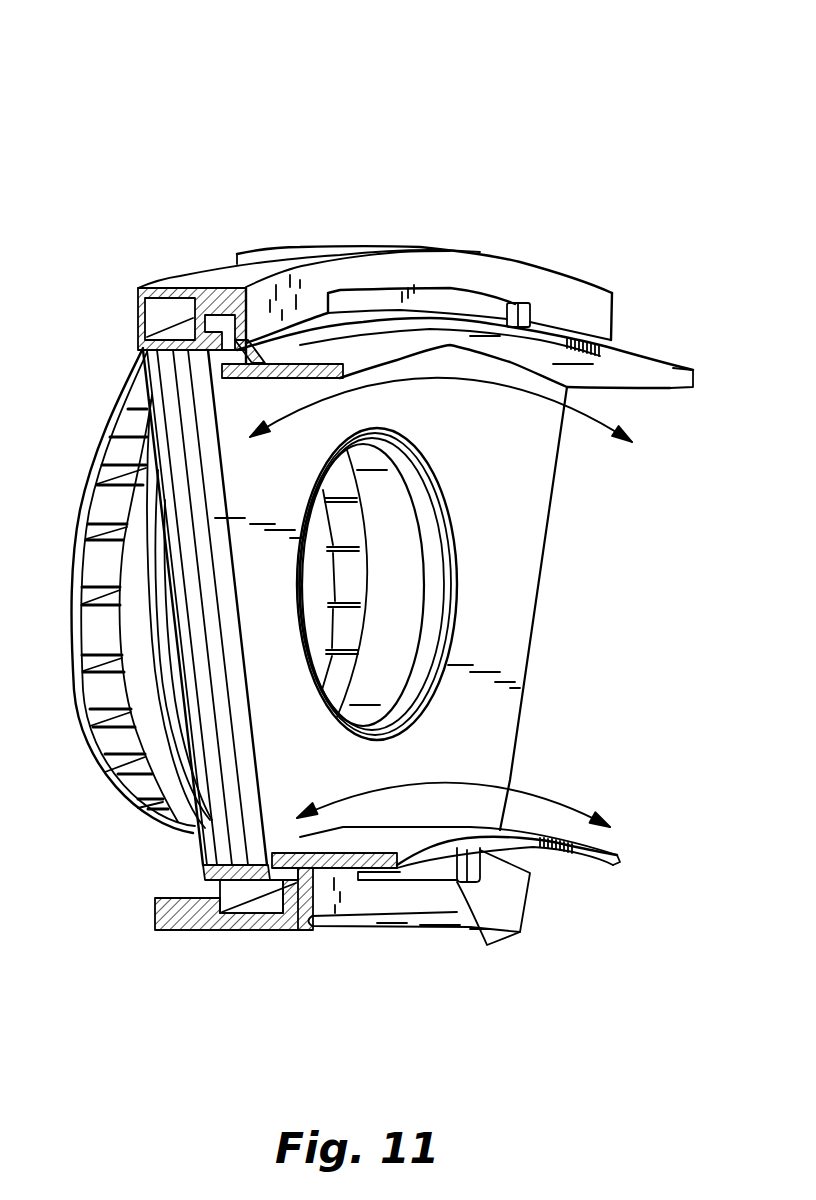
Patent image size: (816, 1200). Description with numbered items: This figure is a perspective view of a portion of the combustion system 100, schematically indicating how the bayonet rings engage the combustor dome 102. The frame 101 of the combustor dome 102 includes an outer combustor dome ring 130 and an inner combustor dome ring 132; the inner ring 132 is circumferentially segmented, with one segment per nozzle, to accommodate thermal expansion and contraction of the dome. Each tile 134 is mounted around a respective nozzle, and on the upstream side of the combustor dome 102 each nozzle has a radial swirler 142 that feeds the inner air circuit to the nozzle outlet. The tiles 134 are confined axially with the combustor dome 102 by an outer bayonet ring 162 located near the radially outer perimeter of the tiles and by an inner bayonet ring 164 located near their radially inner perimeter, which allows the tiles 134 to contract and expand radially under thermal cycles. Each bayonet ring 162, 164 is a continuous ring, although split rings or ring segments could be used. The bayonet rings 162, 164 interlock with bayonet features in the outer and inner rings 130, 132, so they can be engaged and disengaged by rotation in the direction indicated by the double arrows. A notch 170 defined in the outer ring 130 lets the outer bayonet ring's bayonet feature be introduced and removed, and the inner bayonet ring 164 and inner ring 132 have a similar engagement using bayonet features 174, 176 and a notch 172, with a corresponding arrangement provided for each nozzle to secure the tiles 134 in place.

The turbine nozzle assembly 100 is at (118, 117).
The frame 101 is at (227, 250).
The combustor dome 102 is at (289, 608).
The outer combustor dome ring 130 is at (180, 276).
The inner combustor dome ring 132 is at (371, 915).
The tile 134 is at (518, 622).
The radial swirler 142 is at (63, 538).
The outer bayonet ring 162 is at (667, 367).
The inner bayonet ring 164 is at (593, 852).
The notch 170 is at (400, 292).
The notch 172 is at (462, 882).
The bayonet feature 174 is at (310, 892).
The bayonet feature 176 is at (253, 906).